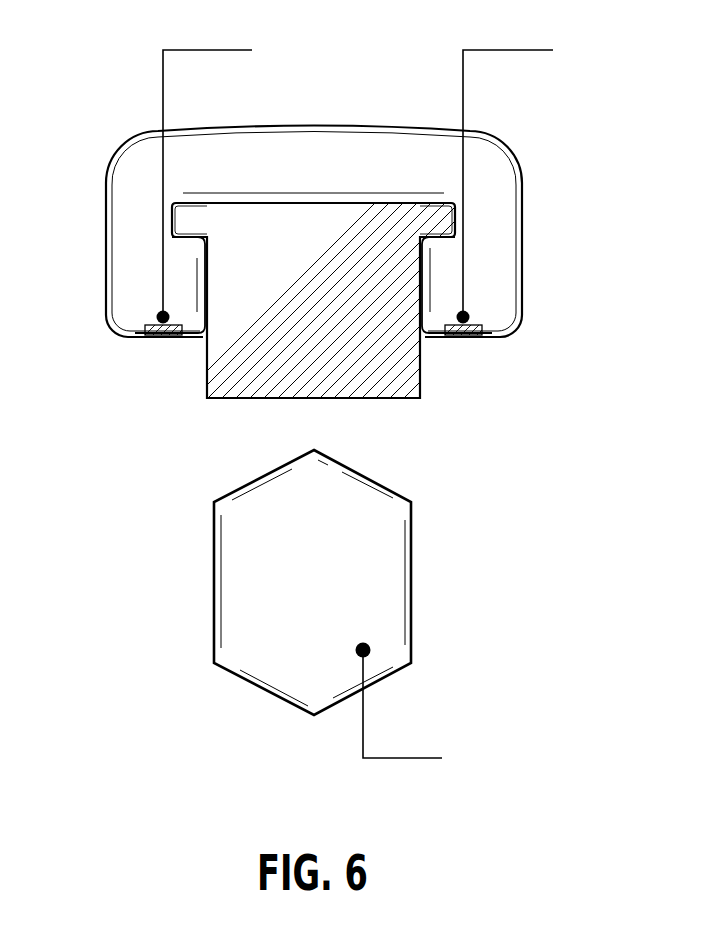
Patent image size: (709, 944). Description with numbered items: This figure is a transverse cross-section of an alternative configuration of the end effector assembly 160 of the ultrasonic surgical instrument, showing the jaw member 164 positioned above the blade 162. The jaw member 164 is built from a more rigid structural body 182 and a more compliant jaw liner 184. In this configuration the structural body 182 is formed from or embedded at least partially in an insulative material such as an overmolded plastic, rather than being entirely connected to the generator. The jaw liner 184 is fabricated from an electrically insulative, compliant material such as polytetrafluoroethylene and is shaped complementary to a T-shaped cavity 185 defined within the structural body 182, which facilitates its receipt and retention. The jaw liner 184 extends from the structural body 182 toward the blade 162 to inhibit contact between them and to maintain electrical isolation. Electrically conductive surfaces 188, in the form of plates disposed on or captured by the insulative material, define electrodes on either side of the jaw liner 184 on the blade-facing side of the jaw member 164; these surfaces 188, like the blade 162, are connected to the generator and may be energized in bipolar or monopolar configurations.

The end effector assembly 160 is at (129, 439).
The blade 162 is at (238, 603).
The jaw member 164 is at (116, 118).
The structural body 182 is at (132, 183).
The jaw liner 184 is at (402, 382).
The cavity 185 is at (172, 217).
The electrically conductive surfaces 188 is at (166, 338).